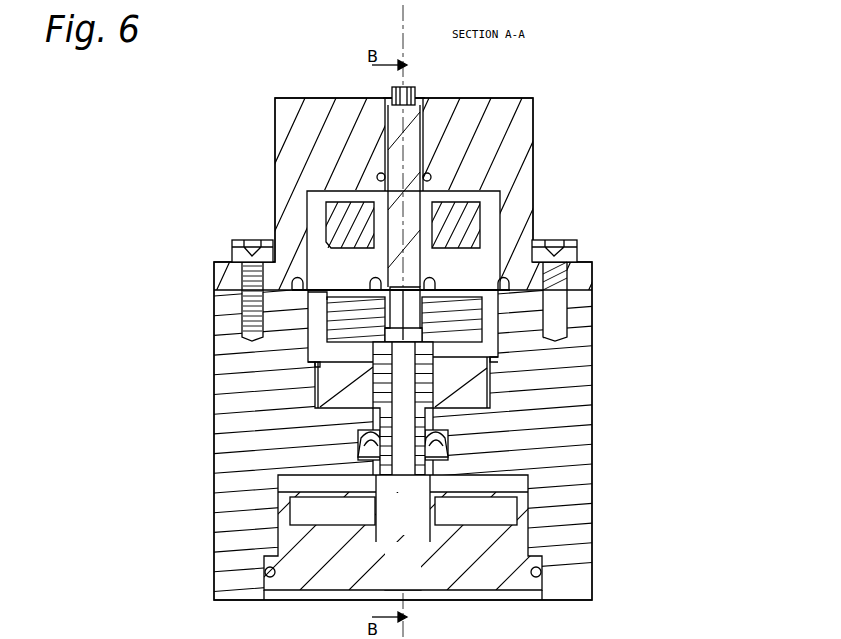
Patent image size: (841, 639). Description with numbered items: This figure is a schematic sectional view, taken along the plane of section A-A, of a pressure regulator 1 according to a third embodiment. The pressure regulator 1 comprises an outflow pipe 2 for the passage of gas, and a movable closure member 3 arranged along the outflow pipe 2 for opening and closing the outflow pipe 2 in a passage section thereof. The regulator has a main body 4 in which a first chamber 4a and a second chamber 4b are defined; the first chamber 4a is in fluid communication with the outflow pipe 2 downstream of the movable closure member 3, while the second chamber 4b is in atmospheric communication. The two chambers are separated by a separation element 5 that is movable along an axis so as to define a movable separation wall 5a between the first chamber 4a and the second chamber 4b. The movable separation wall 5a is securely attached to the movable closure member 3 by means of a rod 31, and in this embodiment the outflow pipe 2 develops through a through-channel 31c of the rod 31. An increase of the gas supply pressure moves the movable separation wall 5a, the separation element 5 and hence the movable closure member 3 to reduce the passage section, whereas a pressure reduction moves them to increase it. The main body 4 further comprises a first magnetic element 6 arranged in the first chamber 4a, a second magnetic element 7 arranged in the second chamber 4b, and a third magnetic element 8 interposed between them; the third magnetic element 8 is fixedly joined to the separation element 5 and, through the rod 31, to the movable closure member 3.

The pressure regulator 1 is at (636, 214).
The outflow pipe 2 is at (410, 382).
The movable closure member 3 is at (437, 483).
The main body 4 is at (216, 290).
The first chamber 4a is at (482, 262).
The second chamber 4b is at (490, 337).
The separation element 5 is at (318, 284).
The movable separation wall 5a is at (318, 298).
The first magnetic element 6 is at (470, 215).
The second magnetic element 7 is at (347, 380).
The third magnetic element 8 is at (337, 325).
The rod 31 is at (385, 425).
The through-channel 31c is at (410, 420).